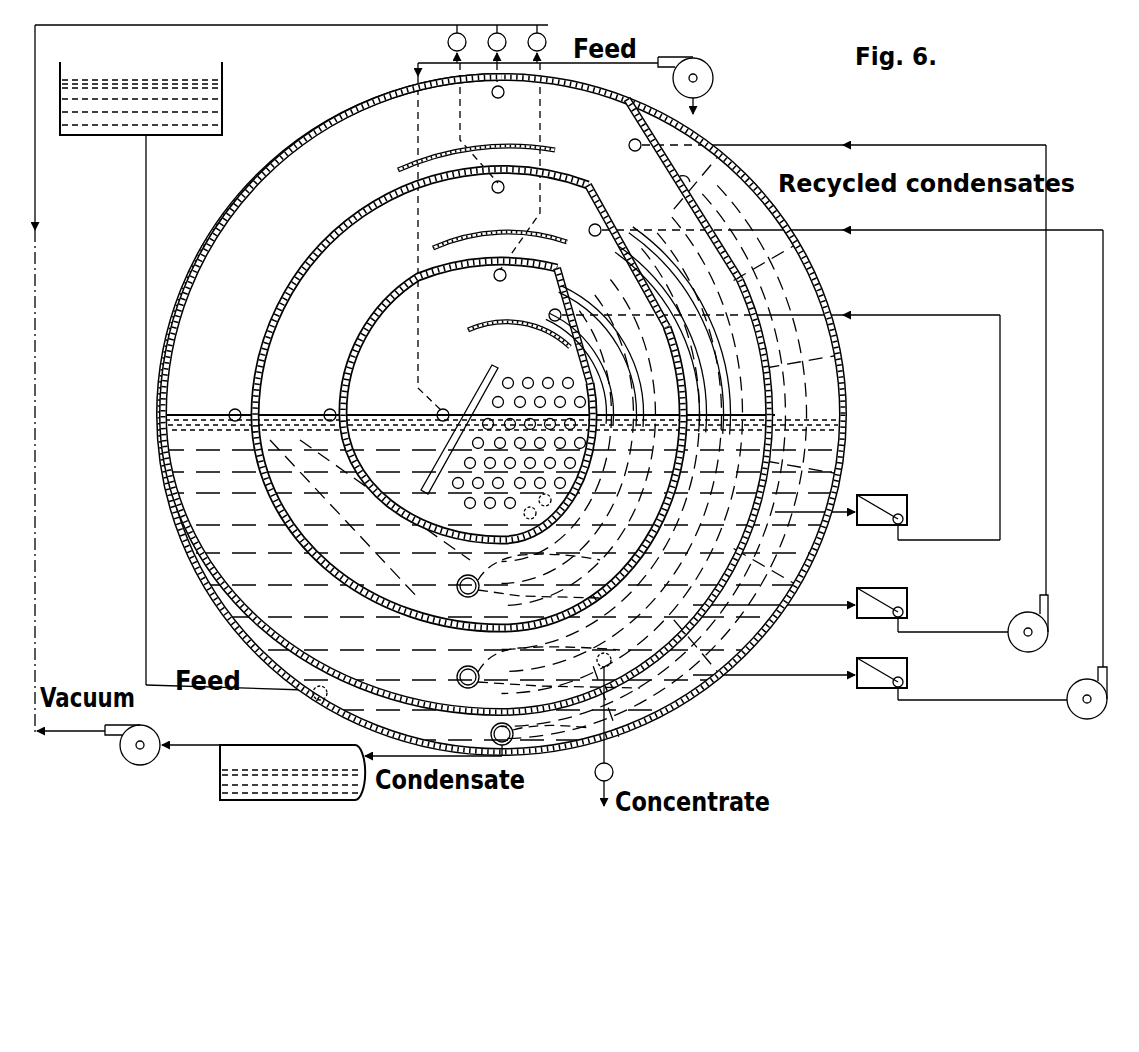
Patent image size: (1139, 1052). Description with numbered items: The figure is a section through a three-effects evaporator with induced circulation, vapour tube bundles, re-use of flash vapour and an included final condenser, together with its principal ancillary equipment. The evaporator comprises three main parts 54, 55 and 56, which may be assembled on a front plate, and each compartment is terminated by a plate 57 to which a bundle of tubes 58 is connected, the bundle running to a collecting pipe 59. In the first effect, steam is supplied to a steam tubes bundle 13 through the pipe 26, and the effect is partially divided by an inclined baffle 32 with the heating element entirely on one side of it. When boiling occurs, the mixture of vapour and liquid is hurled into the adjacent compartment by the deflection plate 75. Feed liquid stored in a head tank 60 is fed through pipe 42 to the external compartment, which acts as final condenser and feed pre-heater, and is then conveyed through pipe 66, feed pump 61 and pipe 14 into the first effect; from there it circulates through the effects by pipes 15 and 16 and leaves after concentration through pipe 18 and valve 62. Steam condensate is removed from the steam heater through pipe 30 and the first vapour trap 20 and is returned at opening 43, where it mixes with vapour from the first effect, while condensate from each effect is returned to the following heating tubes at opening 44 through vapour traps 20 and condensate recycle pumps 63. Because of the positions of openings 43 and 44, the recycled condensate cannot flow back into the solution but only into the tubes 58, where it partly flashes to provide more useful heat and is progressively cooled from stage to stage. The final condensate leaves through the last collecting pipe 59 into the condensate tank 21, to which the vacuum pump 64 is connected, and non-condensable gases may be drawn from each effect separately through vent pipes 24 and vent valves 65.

The steam tubes bundle 13 is at (519, 438).
The pipe 14 is at (445, 410).
The pipe 15 is at (329, 411).
The pipe 16 is at (235, 411).
The pipe 18 is at (610, 660).
The vapour trap 20 is at (885, 496).
The condensate tank 21 is at (292, 772).
The vent pipe 24 is at (496, 95).
The pipe 26 is at (577, 384).
The pipe 30 is at (850, 516).
The inclined baffle 32 is at (489, 376).
The pipe 42 is at (316, 700).
The opening 43 is at (550, 315).
The opening 44 is at (631, 144).
The main part 54 is at (373, 323).
The main part 55 is at (298, 278).
The main part 56 is at (217, 229).
The plate 57 is at (631, 105).
The bundle of tubes 58 is at (620, 381).
The collecting pipe 59 is at (468, 579).
The head tank 60 is at (222, 100).
The feed pump 61 is at (705, 72).
The valve 62 is at (613, 773).
The condensate recycle pump 63 is at (1050, 632).
The vacuum pump 64 is at (144, 742).
The vent valve 65 is at (520, 20).
The pipe 66 is at (681, 182).
The deflection plate 75 is at (412, 166).